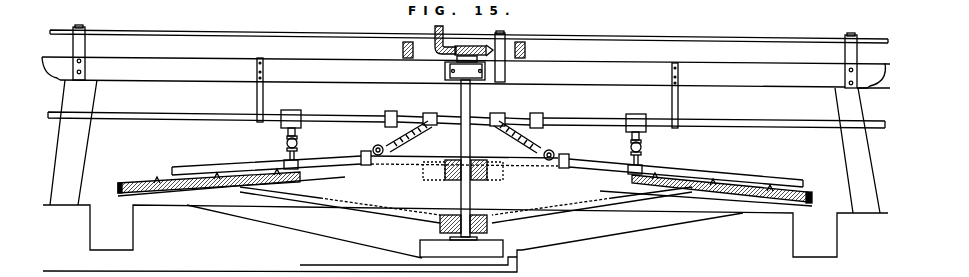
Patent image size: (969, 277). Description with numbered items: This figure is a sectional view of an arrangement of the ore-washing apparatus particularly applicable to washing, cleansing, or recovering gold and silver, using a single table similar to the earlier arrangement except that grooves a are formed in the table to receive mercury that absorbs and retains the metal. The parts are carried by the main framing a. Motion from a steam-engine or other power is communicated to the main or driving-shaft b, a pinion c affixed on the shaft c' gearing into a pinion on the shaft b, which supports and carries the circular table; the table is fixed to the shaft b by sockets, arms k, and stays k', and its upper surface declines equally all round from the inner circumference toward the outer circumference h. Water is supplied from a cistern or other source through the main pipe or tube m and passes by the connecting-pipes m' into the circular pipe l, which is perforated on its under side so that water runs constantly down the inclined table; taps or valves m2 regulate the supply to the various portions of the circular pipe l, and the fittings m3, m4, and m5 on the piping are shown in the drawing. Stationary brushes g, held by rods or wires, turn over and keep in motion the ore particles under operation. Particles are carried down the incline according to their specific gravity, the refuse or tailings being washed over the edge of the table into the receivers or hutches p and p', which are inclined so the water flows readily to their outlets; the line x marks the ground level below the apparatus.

The main framing a is at (466, 119).
The shaft c' is at (469, 33).
The main pipe or tube m is at (466, 117).
The connecting-pipes m' is at (463, 153).
The taps or valves m2 is at (463, 137).
The T-fitting m3 is at (463, 125).
The pipe coupling m4 is at (463, 114).
The valve m5 is at (470, 155).
The arms k is at (452, 167).
The stays k' is at (466, 205).
The circular pipe l is at (487, 170).
The stationary brushes g is at (465, 182).
The main or driving-shaft b is at (461, 156).
The pinion c is at (445, 35).
The outer circumference h is at (474, 46).
The receiver or hutch p is at (537, 235).
The receiver or hutch p' is at (171, 227).
The ground line x is at (282, 262).